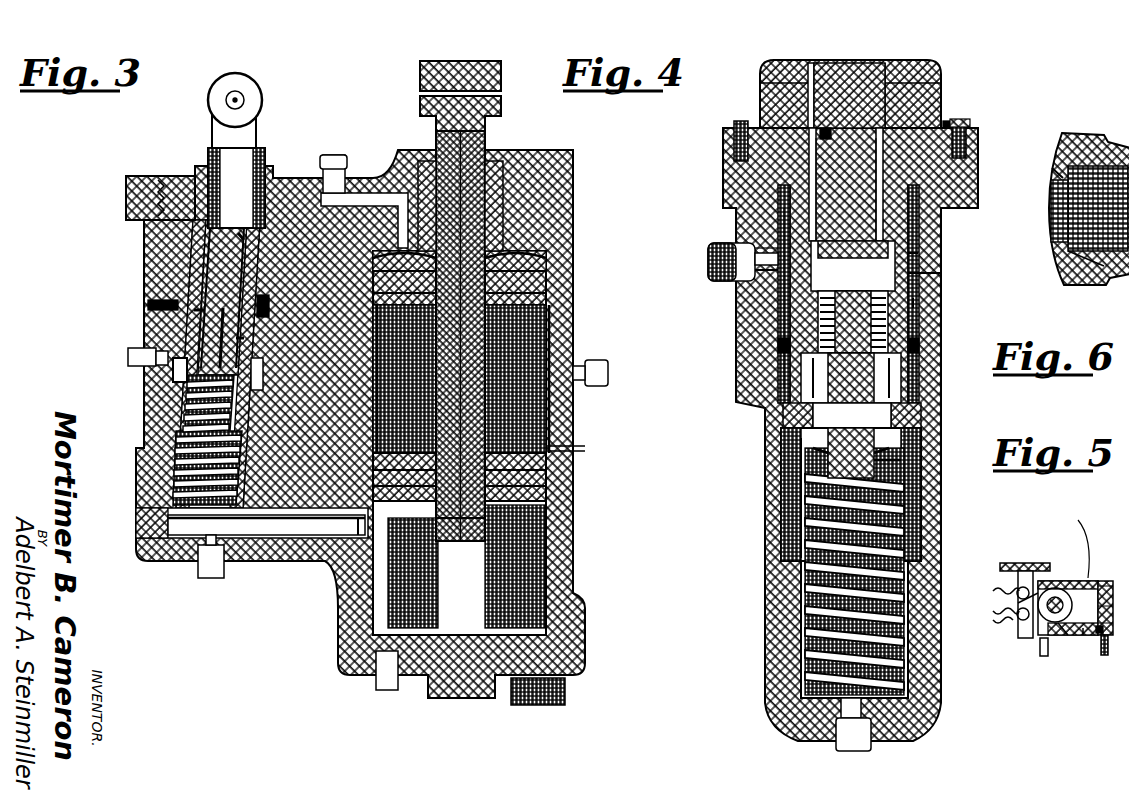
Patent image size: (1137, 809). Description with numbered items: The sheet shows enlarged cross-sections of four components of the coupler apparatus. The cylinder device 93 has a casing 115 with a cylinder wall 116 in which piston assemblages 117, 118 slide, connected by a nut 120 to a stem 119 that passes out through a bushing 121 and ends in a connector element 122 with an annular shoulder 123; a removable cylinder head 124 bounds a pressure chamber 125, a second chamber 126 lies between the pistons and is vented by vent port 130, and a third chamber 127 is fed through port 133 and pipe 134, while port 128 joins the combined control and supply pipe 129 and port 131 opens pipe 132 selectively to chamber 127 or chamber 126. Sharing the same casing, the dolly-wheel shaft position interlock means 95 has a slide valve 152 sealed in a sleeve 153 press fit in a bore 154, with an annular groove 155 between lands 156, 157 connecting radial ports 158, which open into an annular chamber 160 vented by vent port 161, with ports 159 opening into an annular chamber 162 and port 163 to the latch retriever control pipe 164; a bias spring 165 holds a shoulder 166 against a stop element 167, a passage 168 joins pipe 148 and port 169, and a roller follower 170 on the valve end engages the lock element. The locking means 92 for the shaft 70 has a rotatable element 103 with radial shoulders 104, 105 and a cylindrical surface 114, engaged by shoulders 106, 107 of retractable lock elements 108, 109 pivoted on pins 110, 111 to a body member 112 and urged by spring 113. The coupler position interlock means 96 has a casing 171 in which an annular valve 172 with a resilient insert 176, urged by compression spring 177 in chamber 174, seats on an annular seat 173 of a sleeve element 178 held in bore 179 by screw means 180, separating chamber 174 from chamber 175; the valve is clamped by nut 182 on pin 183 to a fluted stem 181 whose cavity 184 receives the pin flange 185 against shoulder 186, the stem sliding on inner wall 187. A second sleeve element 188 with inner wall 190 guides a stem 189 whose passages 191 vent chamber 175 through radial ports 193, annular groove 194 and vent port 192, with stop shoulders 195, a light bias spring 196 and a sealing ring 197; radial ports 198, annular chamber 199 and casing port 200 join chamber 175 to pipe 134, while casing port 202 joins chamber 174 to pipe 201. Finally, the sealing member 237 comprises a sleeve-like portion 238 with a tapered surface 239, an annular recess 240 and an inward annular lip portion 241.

In FIG. 5, the shaft 70 is at (1028, 620).
In FIG. 5, the locking means 92 is at (1068, 569).
In FIG. 3, the means 93 is at (566, 302).
In FIG. 3, the dolly-wheel shaft position interlock means 95 is at (135, 318).
In FIG. 4, the coupler position interlock means 96 is at (980, 187).
In FIG. 5, the rotatable element 103 is at (995, 580).
In FIG. 5, the radial shoulder 104 is at (1097, 575).
In FIG. 5, the radial shoulder 105 is at (1100, 598).
In FIG. 5, the accommodating shoulder 106 is at (1047, 580).
In FIG. 5, the accommodating shoulder 107 is at (1056, 630).
In FIG. 5, the retractable lock element 108 is at (1100, 580).
In FIG. 5, the retractable lock element 109 is at (1076, 628).
In FIG. 5, the pin 110 is at (1009, 584).
In FIG. 5, the pin 111 is at (1009, 614).
In FIG. 5, the body member 112 is at (1020, 555).
In FIG. 5, the spring 113 is at (1009, 603).
In FIG. 5, the cylindrical surface 114 is at (1010, 628).
In FIG. 3, the casing 115 is at (540, 190).
In FIG. 3, the cylinder wall 116 is at (545, 548).
In FIG. 3, the piston assemblage 117 is at (425, 302).
In FIG. 3, the piston assemblage 118 is at (425, 472).
In FIG. 3, the stem 119 is at (452, 362).
In FIG. 5, the stem 119 is at (1100, 645).
In FIG. 3, the nut 120 is at (440, 518).
In FIG. 3, the bushing 121 is at (496, 200).
In FIG. 3, the connector element 122 is at (492, 80).
In FIG. 5, the connector element 122 is at (1100, 616).
In FIG. 3, the annular shoulder 123 is at (492, 108).
In FIG. 5, the annular shoulder 123 is at (1096, 626).
In FIG. 3, the cylinder head 124 is at (556, 648).
In FIG. 3, the pressure chamber 125 is at (560, 590).
In FIG. 3, the pressure chamber 126 is at (543, 412).
In FIG. 3, the pressure chamber 127 is at (530, 248).
In FIG. 3, the port 128 is at (385, 610).
In FIG. 3, the combined control and supply pipe 129 is at (368, 675).
In FIG. 3, the vent port 130 is at (566, 446).
In FIG. 3, the port 131 is at (538, 372).
In FIG. 3, the pipe 132 is at (600, 364).
In FIG. 3, the port 133 is at (390, 222).
In FIG. 3, the pipe 134 is at (338, 147).
In FIG. 4, the pipe 134 is at (700, 248).
In FIG. 3, the pipe 148 is at (190, 565).
In FIG. 3, the slide valve 152 is at (200, 240).
In FIG. 3, the sleeve 153 is at (190, 268).
In FIG. 3, the bore 154 is at (232, 258).
In FIG. 3, the annular groove 155 is at (230, 282).
In FIG. 3, the land 156 is at (240, 230).
In FIG. 3, the land 157 is at (238, 330).
In FIG. 3, the radial ports 158 is at (188, 304).
In FIG. 3, the ports 159 is at (179, 358).
In FIG. 3, the annular chamber 160 is at (262, 300).
In FIG. 3, the vent port 161 is at (140, 297).
In FIG. 3, the annular chamber 162 is at (255, 356).
In FIG. 3, the port 163 is at (148, 355).
In FIG. 3, the latch retriever control pipe 164 is at (120, 348).
In FIG. 3, the bias spring 165 is at (228, 470).
In FIG. 3, the shoulder 166 is at (243, 212).
In FIG. 3, the stop element 167 is at (120, 190).
In FIG. 3, the passage 168 is at (262, 528).
In FIG. 3, the port 169 is at (352, 527).
In FIG. 3, the roller follower 170 is at (254, 82).
In FIG. 5, the roller follower 170 is at (1034, 645).
In FIG. 4, the casing 171 is at (775, 490).
In FIG. 4, the annular valve 172 is at (820, 440).
In FIG. 4, the annular seat 173 is at (776, 400).
In FIG. 4, the chamber 174 is at (793, 518).
In FIG. 4, the chamber 175 is at (910, 292).
In FIG. 4, the annular insert 176 is at (790, 415).
In FIG. 4, the compression spring 177 is at (800, 610).
In FIG. 4, the sleeve element 178 is at (912, 222).
In FIG. 4, the bore 179 is at (768, 160).
In FIG. 4, the screw means 180 is at (726, 120).
In FIG. 4, the fluted stem 181 is at (773, 365).
In FIG. 4, the nut 182 is at (893, 455).
In FIG. 4, the pin 183 is at (812, 455).
In FIG. 4, the hollow cylindrical cavity 184 is at (912, 336).
In FIG. 4, the flange 185 is at (822, 365).
In FIG. 4, the annular shoulder 186 is at (856, 345).
In FIG. 4, the inner cylindrical wall 187 is at (771, 340).
In FIG. 4, the sleeve element 188 is at (878, 70).
In FIG. 4, the stem 189 is at (845, 75).
In FIG. 4, the inner cylindrical wall 190 is at (752, 70).
In FIG. 4, the passages 191 is at (868, 176).
In FIG. 4, the vent port 192 is at (940, 112).
In FIG. 4, the radial ports 193 is at (810, 128).
In FIG. 4, the annular groove 194 is at (900, 105).
In FIG. 4, the stop shoulders 195 is at (820, 227).
In FIG. 4, the light bias spring 196 is at (836, 285).
In FIG. 4, the sealing ring 197 is at (810, 120).
In FIG. 4, the radial ports 198 is at (913, 268).
In FIG. 4, the annular chamber 199 is at (912, 242).
In FIG. 4, the casing port 200 is at (740, 240).
In FIG. 4, the pipe 201 is at (856, 742).
In FIG. 4, the casing port 202 is at (834, 706).
In FIG. 6, the sealing member 237 is at (1044, 235).
In FIG. 6, the sleeve-like portion 238 is at (1049, 126).
In FIG. 6, the tapered surface 239 is at (1117, 272).
In FIG. 6, the annular recess 240 is at (1096, 276).
In FIG. 6, the annular lip portion 241 is at (1044, 160).